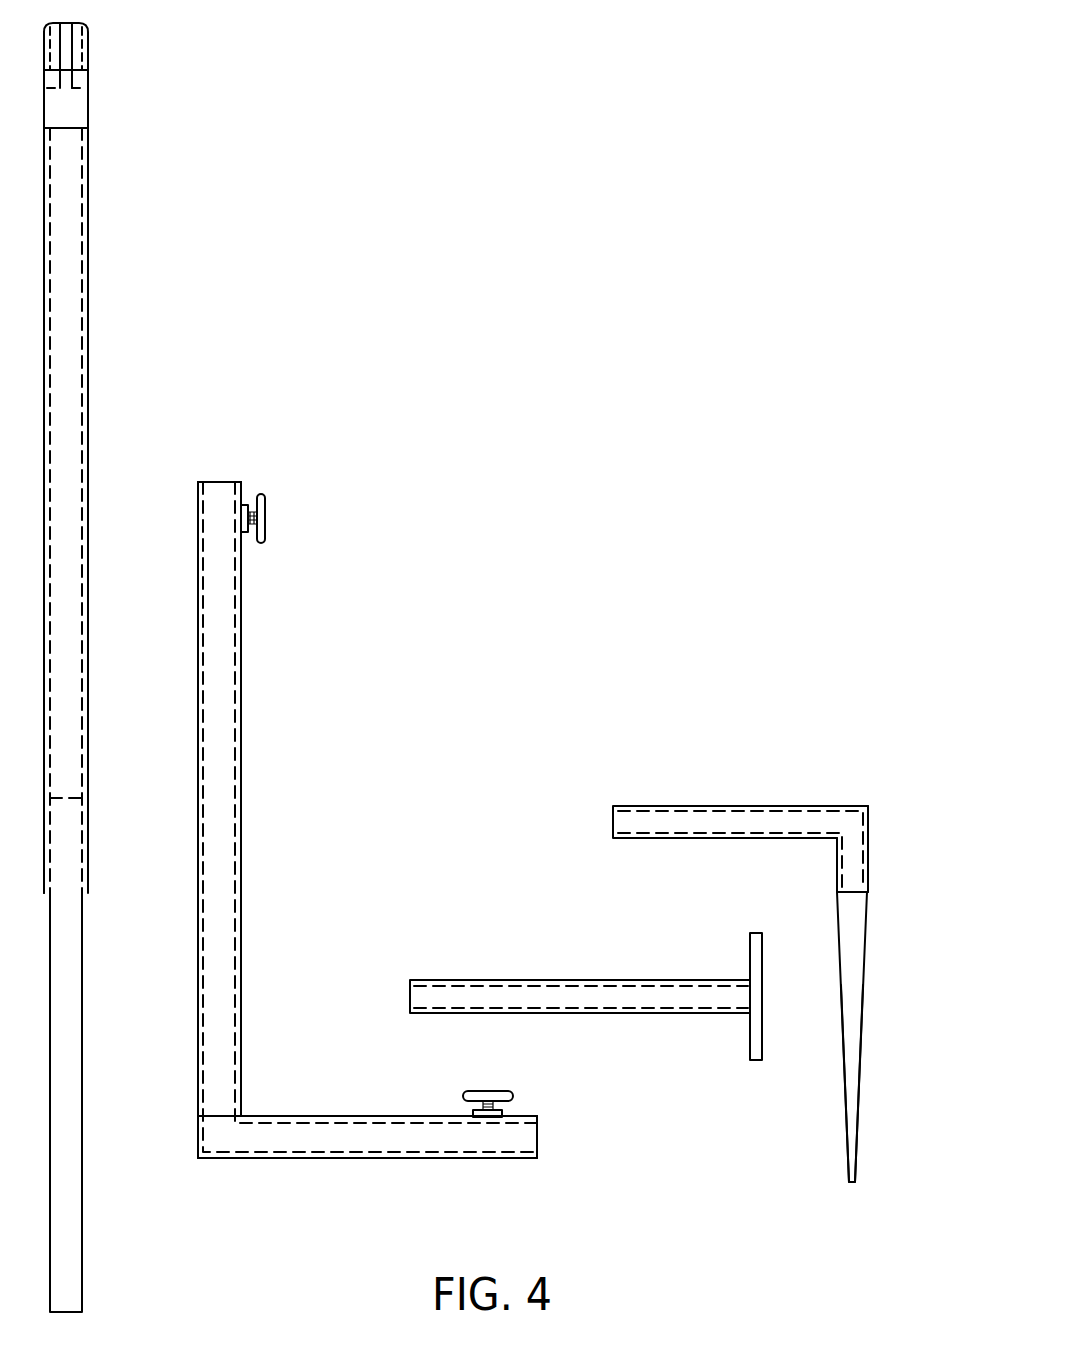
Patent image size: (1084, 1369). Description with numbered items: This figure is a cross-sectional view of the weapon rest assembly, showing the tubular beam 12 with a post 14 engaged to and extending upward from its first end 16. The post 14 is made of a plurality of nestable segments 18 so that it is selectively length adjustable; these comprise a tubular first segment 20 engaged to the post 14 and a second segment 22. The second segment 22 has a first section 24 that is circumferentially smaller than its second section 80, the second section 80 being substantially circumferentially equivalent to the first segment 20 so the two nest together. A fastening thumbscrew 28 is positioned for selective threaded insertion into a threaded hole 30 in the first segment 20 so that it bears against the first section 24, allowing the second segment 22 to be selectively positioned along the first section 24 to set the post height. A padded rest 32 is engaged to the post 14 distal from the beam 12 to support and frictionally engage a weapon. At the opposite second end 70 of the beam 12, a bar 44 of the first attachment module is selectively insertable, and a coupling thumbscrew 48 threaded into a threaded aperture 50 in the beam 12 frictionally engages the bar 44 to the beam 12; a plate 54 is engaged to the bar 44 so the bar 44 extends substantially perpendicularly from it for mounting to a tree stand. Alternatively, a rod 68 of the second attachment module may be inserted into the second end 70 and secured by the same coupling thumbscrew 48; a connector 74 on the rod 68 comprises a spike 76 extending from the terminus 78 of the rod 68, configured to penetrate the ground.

The beam 12 is at (390, 1113).
The post 14 is at (87, 797).
The first end 16 is at (233, 1138).
The nestable segments 18 is at (85, 497).
The first segment 20 is at (238, 863).
The second segment 22 is at (88, 205).
The first section 24 is at (82, 1257).
The fastening thumbscrew 28 is at (267, 518).
The threaded hole 30 is at (240, 519).
The rest 32 is at (80, 43).
The bar 44 is at (513, 982).
The coupling thumbscrew 48 is at (505, 1092).
The threaded aperture 50 is at (483, 1117).
The plate 54 is at (755, 1042).
The rod 68 is at (672, 805).
The second end 70 is at (537, 1138).
The connector 74 is at (866, 937).
The spike 76 is at (862, 985).
The terminus 78 is at (867, 822).
The second section 80 is at (83, 267).